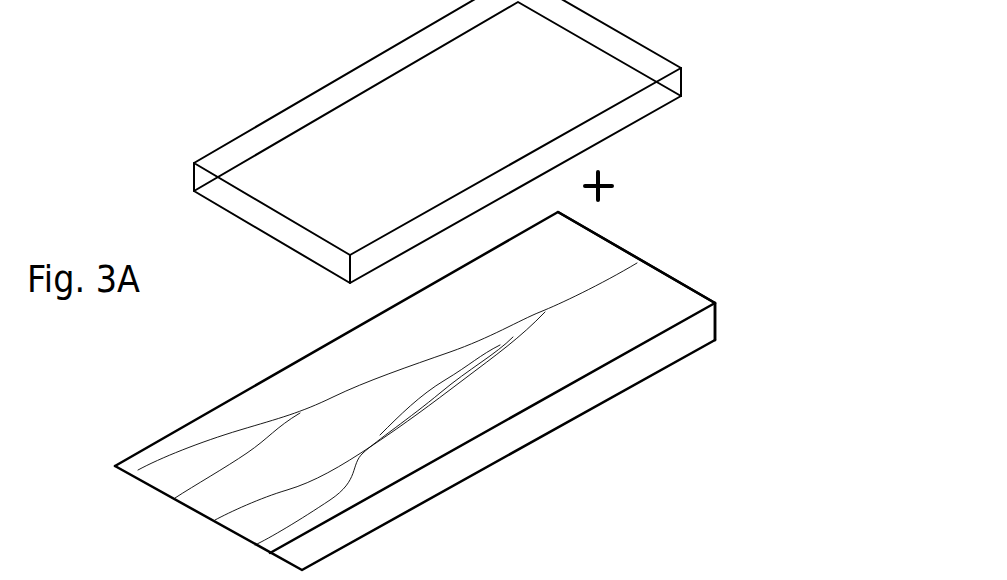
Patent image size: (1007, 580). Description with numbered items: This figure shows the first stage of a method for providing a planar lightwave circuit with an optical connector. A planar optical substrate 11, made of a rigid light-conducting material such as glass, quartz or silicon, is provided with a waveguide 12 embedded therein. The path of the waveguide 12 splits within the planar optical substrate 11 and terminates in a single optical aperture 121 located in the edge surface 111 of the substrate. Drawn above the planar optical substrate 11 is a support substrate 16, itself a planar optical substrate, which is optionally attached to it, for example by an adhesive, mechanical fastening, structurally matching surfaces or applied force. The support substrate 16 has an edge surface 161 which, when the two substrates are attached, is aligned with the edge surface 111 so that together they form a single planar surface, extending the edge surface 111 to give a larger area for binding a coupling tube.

The support substrate 16 is at (522, 81).
The edge surface of the support substrate 161 is at (683, 68).
The planar optical substrate 11 is at (644, 322).
The edge surface 111 is at (717, 295).
The waveguide 12 is at (448, 350).
The aperture 121 is at (645, 257).